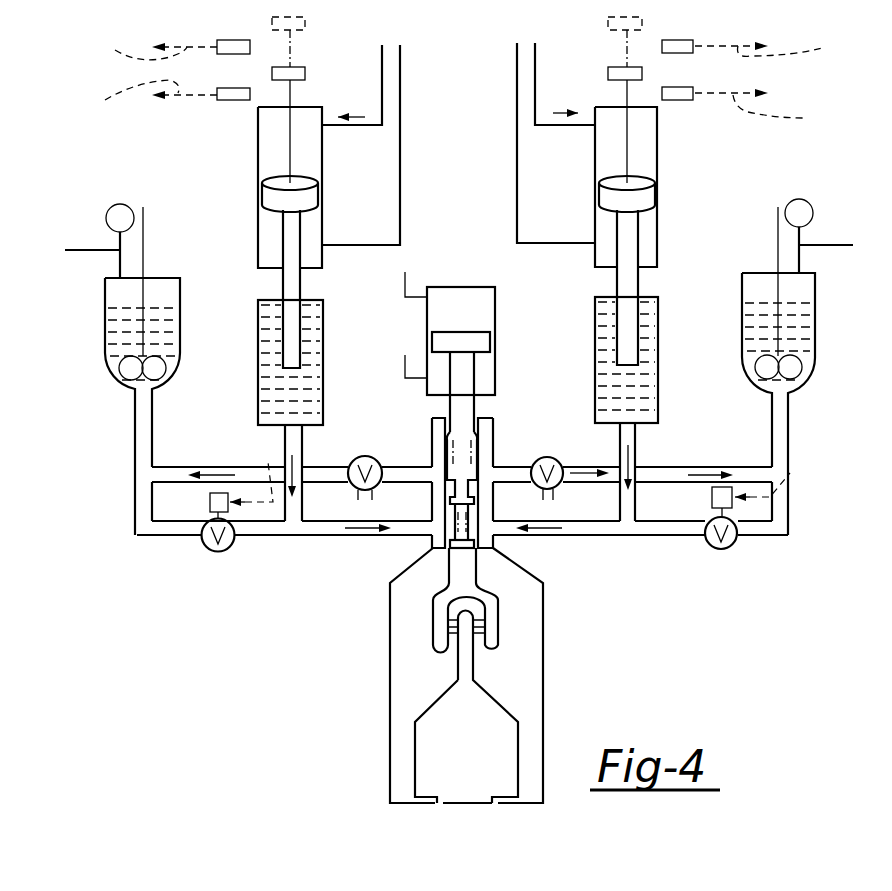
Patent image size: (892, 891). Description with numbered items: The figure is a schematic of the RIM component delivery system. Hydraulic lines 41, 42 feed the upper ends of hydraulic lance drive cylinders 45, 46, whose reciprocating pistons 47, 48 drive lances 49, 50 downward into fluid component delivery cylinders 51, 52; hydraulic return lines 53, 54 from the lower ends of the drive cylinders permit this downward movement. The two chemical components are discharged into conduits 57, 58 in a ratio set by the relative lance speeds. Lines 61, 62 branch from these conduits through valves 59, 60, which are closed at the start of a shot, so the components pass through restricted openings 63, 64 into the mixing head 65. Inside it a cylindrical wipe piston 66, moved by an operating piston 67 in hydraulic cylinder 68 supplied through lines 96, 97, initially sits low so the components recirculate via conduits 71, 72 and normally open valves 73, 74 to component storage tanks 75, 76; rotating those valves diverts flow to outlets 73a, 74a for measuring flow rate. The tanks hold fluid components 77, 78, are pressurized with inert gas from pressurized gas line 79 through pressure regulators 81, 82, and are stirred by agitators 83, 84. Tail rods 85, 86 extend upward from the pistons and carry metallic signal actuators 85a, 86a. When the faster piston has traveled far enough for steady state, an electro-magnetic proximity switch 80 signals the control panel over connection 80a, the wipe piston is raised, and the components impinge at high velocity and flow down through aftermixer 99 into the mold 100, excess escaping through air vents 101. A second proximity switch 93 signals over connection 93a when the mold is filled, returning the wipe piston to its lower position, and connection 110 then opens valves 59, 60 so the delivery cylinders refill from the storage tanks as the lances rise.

The hydraulic line 41 is at (535, 76).
The hydraulic line 42 is at (382, 52).
The hydraulic lance drive cylinder 45 is at (657, 172).
The hydraulic lance drive cylinder 46 is at (258, 118).
The reciprocating piston 47 is at (645, 200).
The reciprocating piston 48 is at (318, 192).
The lance 49 is at (638, 283).
The lance 50 is at (305, 285).
The fluid component delivery cylinder 51 is at (658, 395).
The fluid component delivery cylinder 52 is at (258, 398).
The hydraulic return line 53 is at (517, 200).
The hydraulic return line 54 is at (400, 192).
The conduit 57 is at (640, 452).
The conduit 58 is at (302, 444).
The valve 59 is at (721, 549).
The valve 60 is at (218, 552).
The line 61 is at (777, 537).
The line 62 is at (160, 537).
The restricted opening 63 is at (505, 540).
The restricted opening 64 is at (436, 548).
The mixing head 65 is at (432, 430).
The wipe piston 66 is at (457, 486).
The operating piston 67 is at (490, 345).
The hydraulic cylinder 68 is at (500, 302).
The conduit 71 is at (505, 462).
The conduit 72 is at (411, 458).
The valve 73 is at (558, 460).
The outlet 73a is at (553, 498).
The valve 74 is at (352, 487).
The outlet 74a is at (338, 537).
The component storage tank 75 is at (815, 340).
The component storage tank 76 is at (105, 323).
The fluid component 77 is at (805, 300).
The fluid component 78 is at (115, 305).
The pressurized gas line 79 is at (81, 249).
The electro-magnetic proximity switch 80 is at (237, 55).
The connection 80a is at (470, 48).
The pressure regulator 81 is at (805, 200).
The pressure regulator 82 is at (122, 204).
The agitator 83 is at (800, 372).
The agitator 84 is at (120, 373).
The tail rod 85 is at (624, 88).
The metallic signal actuator 85a is at (644, 25).
The tail rod 86 is at (293, 52).
The metallic signal actuator 86a is at (247, 45).
The proximity switch 93 is at (217, 100).
The connection 93a is at (458, 110).
The line 96 is at (405, 372).
The line 97 is at (408, 283).
The aftermixer 99 is at (492, 627).
The mold 100 is at (495, 712).
The air vent 101 is at (440, 804).
The connection 110 is at (528, 477).